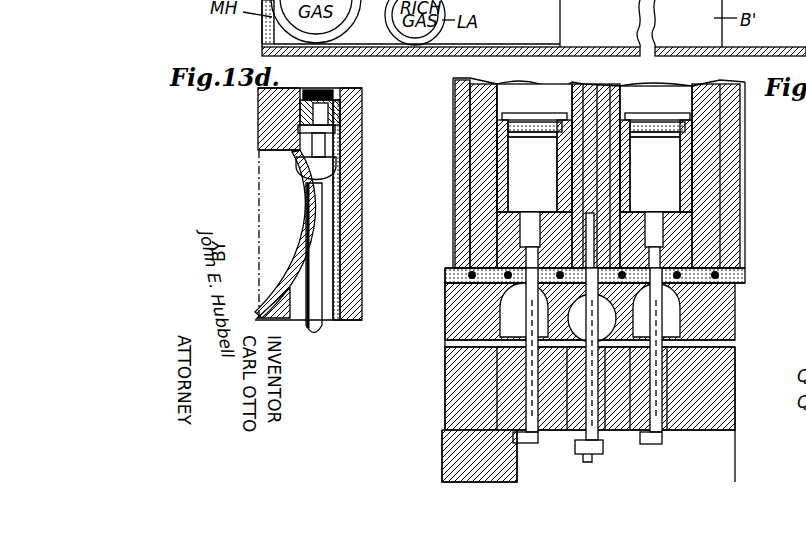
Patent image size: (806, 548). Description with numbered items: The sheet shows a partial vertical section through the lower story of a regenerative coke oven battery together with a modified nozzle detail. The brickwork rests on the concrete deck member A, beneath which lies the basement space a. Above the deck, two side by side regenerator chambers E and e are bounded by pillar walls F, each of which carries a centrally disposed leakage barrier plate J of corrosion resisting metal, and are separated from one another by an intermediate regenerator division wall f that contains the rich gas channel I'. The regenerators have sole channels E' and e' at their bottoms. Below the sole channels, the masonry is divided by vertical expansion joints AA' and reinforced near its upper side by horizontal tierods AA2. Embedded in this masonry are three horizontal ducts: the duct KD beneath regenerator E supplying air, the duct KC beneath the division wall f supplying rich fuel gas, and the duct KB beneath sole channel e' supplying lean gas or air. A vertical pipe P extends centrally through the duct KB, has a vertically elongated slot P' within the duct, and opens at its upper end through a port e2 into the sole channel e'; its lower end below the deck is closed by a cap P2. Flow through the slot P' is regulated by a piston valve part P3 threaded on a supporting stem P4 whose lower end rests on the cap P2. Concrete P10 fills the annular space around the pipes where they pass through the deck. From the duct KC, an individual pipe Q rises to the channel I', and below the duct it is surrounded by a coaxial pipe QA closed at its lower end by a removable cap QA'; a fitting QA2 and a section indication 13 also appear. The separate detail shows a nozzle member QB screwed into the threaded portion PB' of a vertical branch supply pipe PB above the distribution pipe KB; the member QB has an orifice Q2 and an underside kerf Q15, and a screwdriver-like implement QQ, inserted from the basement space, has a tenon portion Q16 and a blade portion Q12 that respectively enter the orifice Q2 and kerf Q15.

In FIG. 13D, the threaded portion PB' is at (328, 204).
In FIG. 13D, the vertical branch supply pipe PB is at (323, 235).
In FIG. 13D, the nozzle member QB is at (332, 91).
In FIG. 13D, the orifice Q2 is at (317, 117).
In FIG. 13D, the kerf Q15 is at (328, 133).
In FIG. 13D, the tenon portion Q16 is at (343, 147).
In FIG. 13D, the blade portion Q12 is at (297, 172).
In FIG. 13D, the screw driver like implement QQ is at (313, 232).
In FIG. 13D, the duct KB is at (282, 310).
In FIG. 12, the duct KB is at (700, 297).
In FIG. 12, the deck member A is at (736, 420).
In FIG. 12, the basement space a is at (713, 472).
In FIG. 12, the regenerator chamber E is at (534, 148).
In FIG. 12, the regenerator chamber e is at (656, 149).
In FIG. 12, the intermediate regenerator division wall f is at (630, 87).
In FIG. 12, the channel I' is at (540, 162).
In FIG. 12, the sole channel e' is at (657, 162).
In FIG. 12, the duct KC is at (538, 194).
In FIG. 12, the sole channel E' is at (467, 164).
In FIG. 12, the pipe Q is at (594, 290).
In FIG. 12, the port e2 is at (657, 228).
In FIG. 12, the coaxial pipe QA is at (594, 362).
In FIG. 12, the removable cap QA' is at (635, 478).
In FIG. 12, the nut QA2 is at (578, 458).
In FIG. 12, the cap P2 is at (515, 437).
In FIG. 12, the section line 13 is at (585, 466).
In FIG. 12, the vertical pipe P is at (559, 411).
In FIG. 12, the concrete P10 is at (512, 397).
In FIG. 12, the supporting stem P4 is at (512, 414).
In FIG. 12, the piston valve part P3 is at (512, 340).
In FIG. 12, the vertical expansion joint AA' is at (597, 321).
In FIG. 12, the duct KD is at (505, 296).
In FIG. 12, the slot P' is at (593, 272).
In FIG. 12, the horizontal tierod AA2 is at (525, 268).
In FIG. 12, the pillar wall F is at (478, 92).
In FIG. 12, the leakage barrier plate J is at (480, 124).